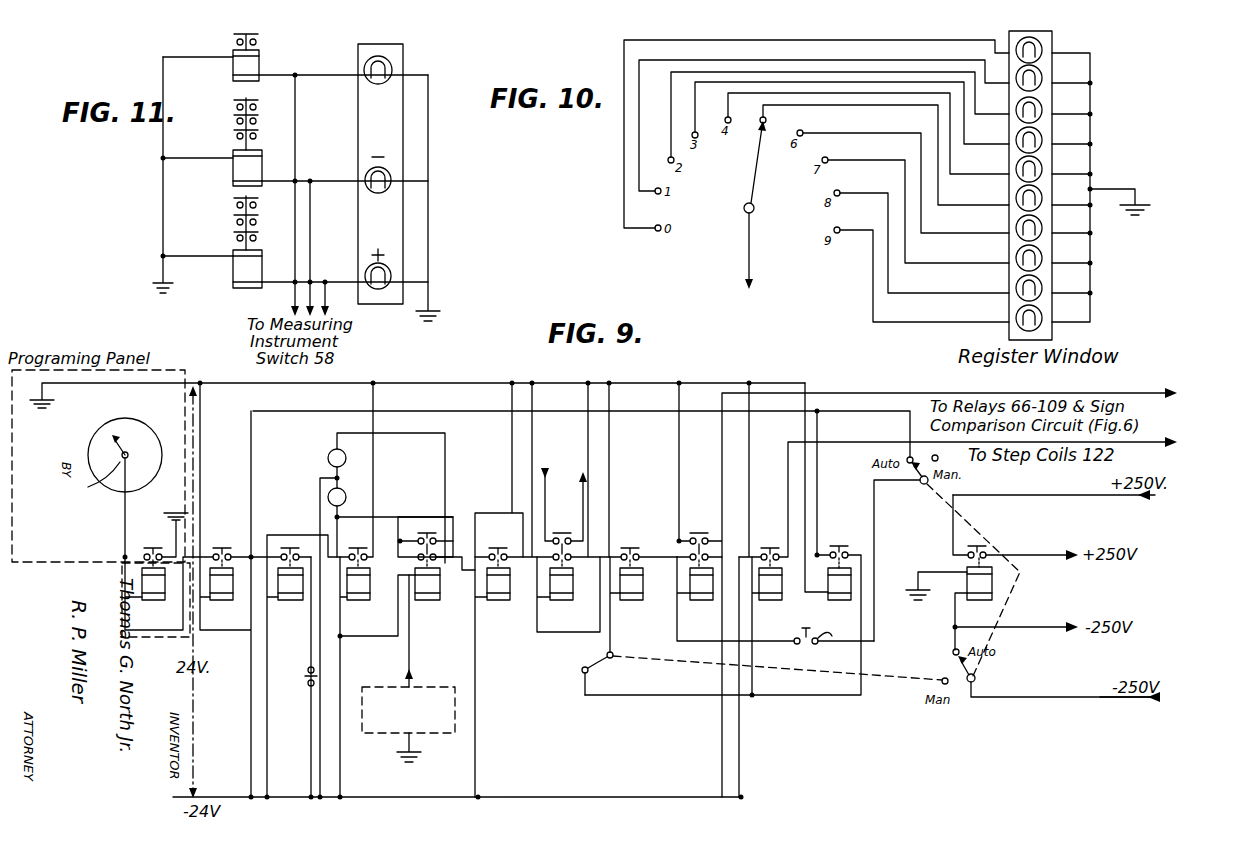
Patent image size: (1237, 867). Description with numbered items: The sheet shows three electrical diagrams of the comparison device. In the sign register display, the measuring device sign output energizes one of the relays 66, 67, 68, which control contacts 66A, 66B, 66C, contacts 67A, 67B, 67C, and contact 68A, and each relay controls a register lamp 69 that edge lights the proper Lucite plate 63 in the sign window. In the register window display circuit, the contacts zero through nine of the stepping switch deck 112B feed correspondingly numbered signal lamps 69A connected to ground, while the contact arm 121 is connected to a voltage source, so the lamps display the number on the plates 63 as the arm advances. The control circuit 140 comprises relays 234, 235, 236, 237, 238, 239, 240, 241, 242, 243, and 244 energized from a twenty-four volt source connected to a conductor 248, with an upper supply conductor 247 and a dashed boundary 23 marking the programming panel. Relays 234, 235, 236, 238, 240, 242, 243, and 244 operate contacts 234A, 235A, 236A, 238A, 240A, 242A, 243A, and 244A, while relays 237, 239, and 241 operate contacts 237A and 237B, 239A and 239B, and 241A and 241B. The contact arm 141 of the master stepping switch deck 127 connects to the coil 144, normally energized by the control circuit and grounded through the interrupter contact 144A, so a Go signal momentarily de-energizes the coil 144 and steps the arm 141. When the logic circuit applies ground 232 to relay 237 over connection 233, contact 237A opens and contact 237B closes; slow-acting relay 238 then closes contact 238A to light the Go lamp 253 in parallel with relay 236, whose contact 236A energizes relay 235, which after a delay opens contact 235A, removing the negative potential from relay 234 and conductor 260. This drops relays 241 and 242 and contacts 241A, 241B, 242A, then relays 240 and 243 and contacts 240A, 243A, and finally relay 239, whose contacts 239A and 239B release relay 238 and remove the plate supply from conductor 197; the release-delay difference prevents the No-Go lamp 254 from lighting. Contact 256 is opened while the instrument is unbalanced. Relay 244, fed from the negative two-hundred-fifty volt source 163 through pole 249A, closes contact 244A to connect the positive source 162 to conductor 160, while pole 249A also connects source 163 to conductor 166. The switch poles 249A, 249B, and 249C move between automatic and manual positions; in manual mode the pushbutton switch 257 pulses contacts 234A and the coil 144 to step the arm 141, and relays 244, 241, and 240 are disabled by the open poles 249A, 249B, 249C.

In FIG. 9, the programming panel boundary 23 is at (190, 380).
In FIG. 9, the master stepping switch deck 127 is at (122, 420).
In FIG. 9, the contact arm 141 is at (98, 487).
In FIG. 9, the coil 144 is at (152, 602).
In FIG. 9, the interrupter contact 144A is at (153, 548).
In FIG. 9, the relay 234 is at (220, 602).
In FIG. 9, the contacts 234A is at (221, 547).
In FIG. 9, the relay 235 is at (290, 602).
In FIG. 9, the contact 235A is at (295, 532).
In FIG. 9, the relay 236 is at (360, 602).
In FIG. 9, the contact 236A is at (364, 537).
In FIG. 9, the relay 237 is at (430, 602).
In FIG. 9, the normally closed contact 237A is at (418, 559).
In FIG. 9, the normally open contact 237B is at (428, 532).
In FIG. 9, the slow-acting relay 238 is at (500, 602).
In FIG. 9, the contact 238A is at (498, 547).
In FIG. 9, the relay 239 is at (562, 602).
In FIG. 9, the contact 239A is at (553, 575).
In FIG. 9, the contact 239B is at (562, 532).
In FIG. 9, the relay 240 is at (630, 602).
In FIG. 9, the contact 240A is at (630, 547).
In FIG. 9, the relay 241 is at (701, 602).
In FIG. 9, the contact 241A is at (690, 560).
In FIG. 9, the contact 241B is at (690, 533).
In FIG. 9, the relay 242 is at (770, 602).
In FIG. 9, the contact 242A is at (772, 540).
In FIG. 9, the relay 243 is at (839, 602).
In FIG. 9, the contact 243A is at (839, 546).
In FIG. 9, the relay 244 is at (979, 602).
In FIG. 9, the contact 244A is at (977, 546).
In FIG. 9, the positive 24V supply line 247 is at (488, 383).
In FIG. 9, the conductor 248 is at (526, 796).
In FIG. 9, the switch pole 249A is at (965, 676).
In FIG. 9, the switch pole 249B is at (920, 486).
In FIG. 9, the switch pole 249C is at (609, 665).
In FIG. 9, the Go lamp 253 is at (340, 477).
In FIG. 9, the No-Go lamp 254 is at (328, 453).
In FIG. 9, the contact 256 is at (834, 648).
In FIG. 9, the pushbutton switch 257 is at (307, 673).
In FIG. 9, the conductor 260 is at (280, 411).
In FIG. 9, the control circuit 140 is at (655, 384).
In FIG. 9, the voltage supply conductor 160 is at (545, 470).
In FIG. 9, the plus two-hundred-fifty volt source 162 is at (1122, 496).
In FIG. 9, the minus two-hundred-fifty volt source 163 is at (1158, 698).
In FIG. 9, the voltage supply conductor 166 is at (1073, 623).
In FIG. 9, the conductor 197 is at (582, 476).
In FIG. 9, the ground 232 is at (400, 745).
In FIG. 9, the logic circuit output line 233 is at (405, 665).
In FIG. 10, the Lucite plate 63 is at (1054, 40).
In FIG. 10, the signal lamp 69A is at (1042, 328).
In FIG. 10, the contact arm 121 is at (752, 183).
In FIG. 10, the stepping switch deck 112B is at (746, 213).
In FIG. 11, the relay 66 is at (233, 284).
In FIG. 11, the contact 66A is at (233, 236).
In FIG. 11, the contact 66B is at (233, 221).
In FIG. 11, the contact 66C is at (233, 206).
In FIG. 11, the relay 67 is at (233, 176).
In FIG. 11, the contact 67A is at (233, 133).
In FIG. 11, the contact 67B is at (233, 120).
In FIG. 11, the contact 67C is at (233, 105).
In FIG. 11, the relay 68 is at (233, 72).
In FIG. 11, the contact 68A is at (233, 34).
In FIG. 11, the register lamp 69 is at (392, 62).